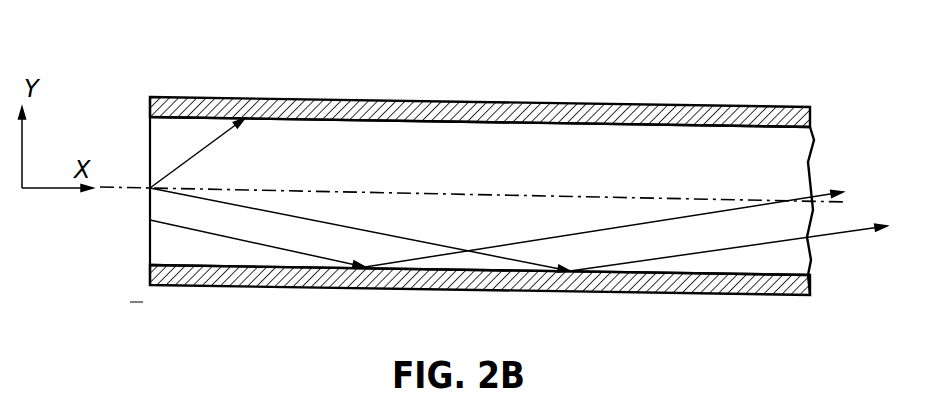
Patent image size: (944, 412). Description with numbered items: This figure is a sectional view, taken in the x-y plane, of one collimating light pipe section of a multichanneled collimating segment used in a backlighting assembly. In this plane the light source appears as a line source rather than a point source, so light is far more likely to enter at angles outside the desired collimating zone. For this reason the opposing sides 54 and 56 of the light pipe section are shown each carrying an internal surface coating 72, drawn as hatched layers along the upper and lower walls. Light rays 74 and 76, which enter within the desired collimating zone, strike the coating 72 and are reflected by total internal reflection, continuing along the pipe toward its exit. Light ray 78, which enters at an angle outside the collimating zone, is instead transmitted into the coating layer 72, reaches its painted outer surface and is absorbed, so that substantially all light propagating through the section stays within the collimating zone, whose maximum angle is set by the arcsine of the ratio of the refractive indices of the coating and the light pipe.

The opposing side 54 is at (480, 91).
The opposing side 56 is at (480, 302).
The coating 72 is at (480, 197).
The light ray 74 is at (518, 230).
The light ray 76 is at (496, 262).
The light ray 78 is at (215, 153).